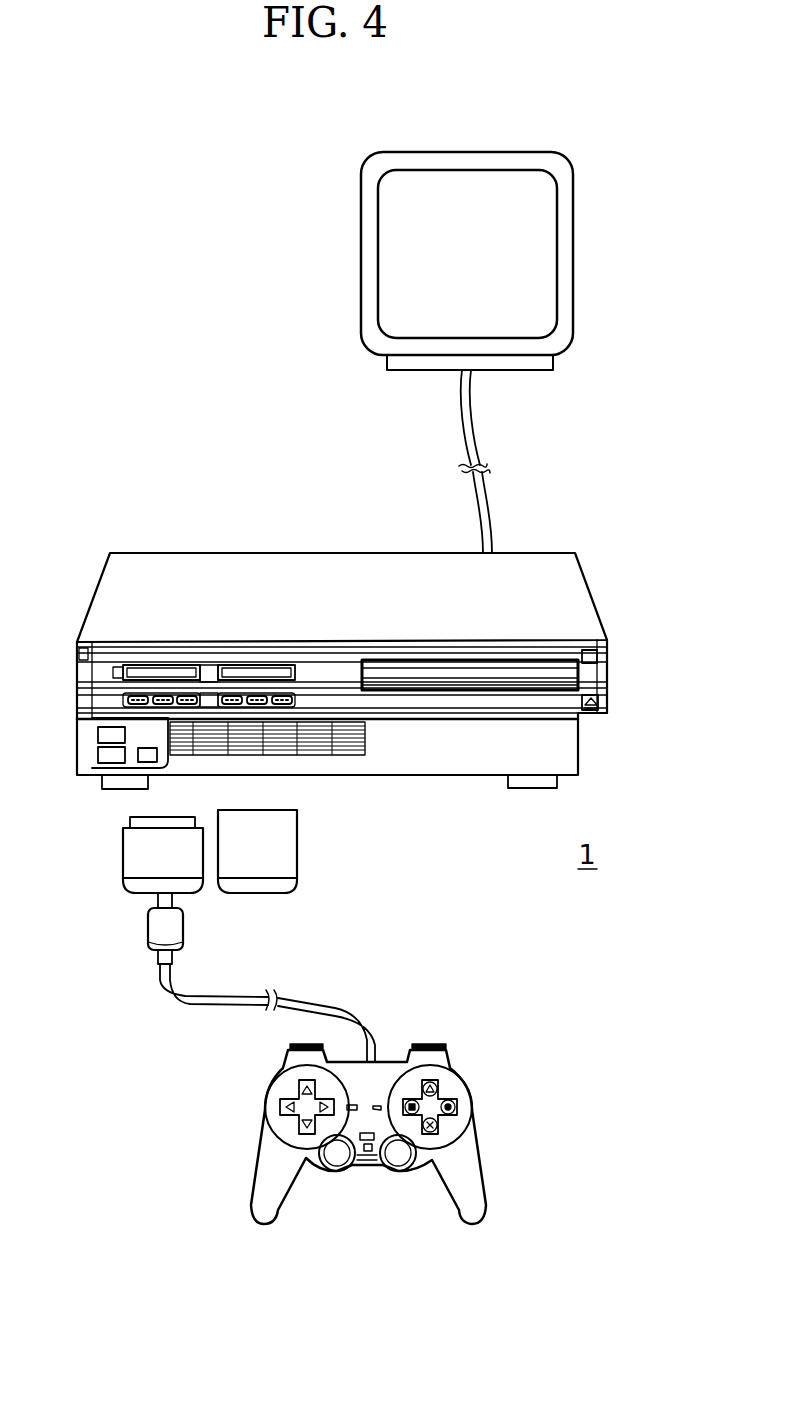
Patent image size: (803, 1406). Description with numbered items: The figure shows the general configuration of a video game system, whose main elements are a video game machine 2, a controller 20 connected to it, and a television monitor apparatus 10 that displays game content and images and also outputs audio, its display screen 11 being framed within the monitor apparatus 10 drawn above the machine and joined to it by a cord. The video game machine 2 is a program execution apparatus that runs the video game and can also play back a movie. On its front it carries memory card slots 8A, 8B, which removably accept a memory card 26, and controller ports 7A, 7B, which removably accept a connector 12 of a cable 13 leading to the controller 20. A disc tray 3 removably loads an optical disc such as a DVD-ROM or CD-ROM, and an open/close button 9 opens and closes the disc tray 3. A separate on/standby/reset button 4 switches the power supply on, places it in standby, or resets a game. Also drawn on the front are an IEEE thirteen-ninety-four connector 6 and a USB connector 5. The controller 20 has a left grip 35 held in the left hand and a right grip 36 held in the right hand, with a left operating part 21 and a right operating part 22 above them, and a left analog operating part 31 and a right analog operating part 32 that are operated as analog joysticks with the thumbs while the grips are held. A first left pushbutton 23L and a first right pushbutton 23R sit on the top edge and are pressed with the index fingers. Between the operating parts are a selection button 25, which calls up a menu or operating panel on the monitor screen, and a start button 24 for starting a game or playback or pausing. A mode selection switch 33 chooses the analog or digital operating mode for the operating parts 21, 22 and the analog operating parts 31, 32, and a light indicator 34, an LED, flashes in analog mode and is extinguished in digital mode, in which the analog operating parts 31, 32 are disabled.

The video game machine 2 is at (568, 573).
The disc tray 3 is at (508, 676).
The on/standby/reset button 4 is at (585, 650).
The USB connector 5 is at (98, 755).
The IEEE 1394 connector 6 is at (140, 760).
The controller port 7A is at (124, 694).
The controller port 7B is at (290, 693).
The memory card slot 8A is at (182, 675).
The memory card slot 8B is at (255, 675).
The open/close button 9 is at (590, 710).
The television monitor apparatus 10 is at (563, 180).
The display screen 11 is at (464, 195).
The connector 12 is at (150, 872).
The cable 13 is at (220, 1000).
The controller 20 is at (481, 1137).
The left operating part 21 is at (263, 1112).
The right operating part 22 is at (447, 1091).
The first left pushbutton 23L is at (305, 1044).
The first right pushbutton 23R is at (427, 1043).
The start button 24 is at (378, 1112).
The selection button 25 is at (355, 1105).
The memory card 26 is at (300, 857).
The left analog operating part 31 is at (330, 1171).
The right analog operating part 32 is at (400, 1165).
The mode selection switch 33 is at (352, 1171).
The light indicator 34 is at (366, 1152).
The left grip 35 is at (262, 1200).
The right grip 36 is at (474, 1182).